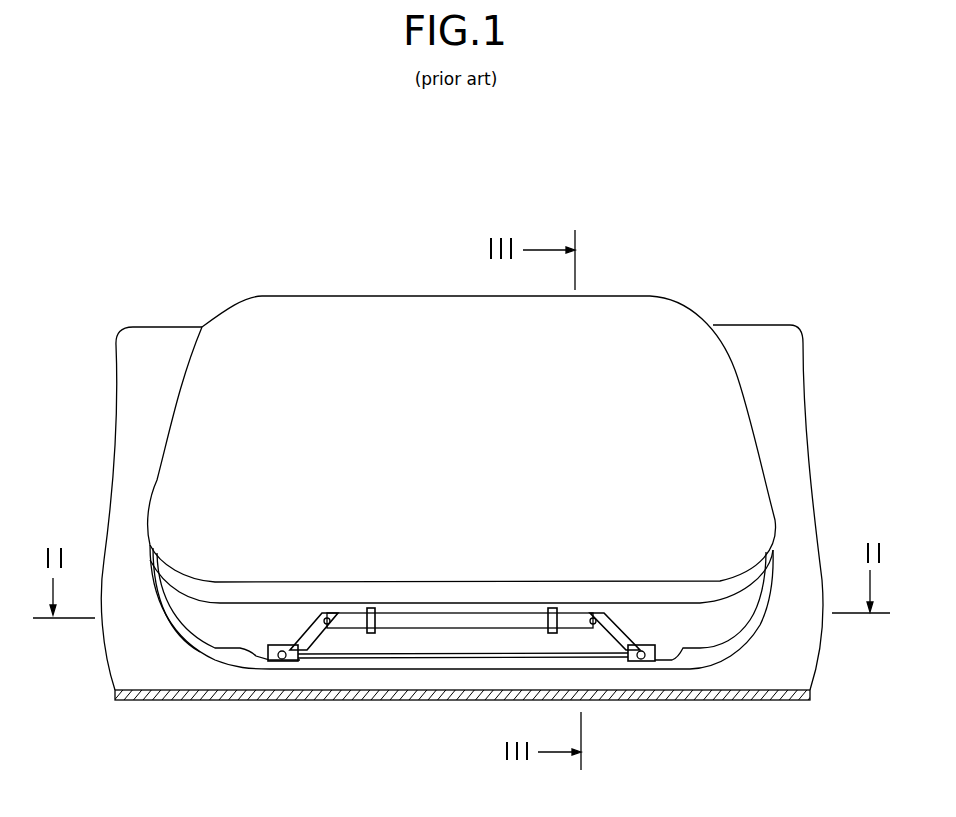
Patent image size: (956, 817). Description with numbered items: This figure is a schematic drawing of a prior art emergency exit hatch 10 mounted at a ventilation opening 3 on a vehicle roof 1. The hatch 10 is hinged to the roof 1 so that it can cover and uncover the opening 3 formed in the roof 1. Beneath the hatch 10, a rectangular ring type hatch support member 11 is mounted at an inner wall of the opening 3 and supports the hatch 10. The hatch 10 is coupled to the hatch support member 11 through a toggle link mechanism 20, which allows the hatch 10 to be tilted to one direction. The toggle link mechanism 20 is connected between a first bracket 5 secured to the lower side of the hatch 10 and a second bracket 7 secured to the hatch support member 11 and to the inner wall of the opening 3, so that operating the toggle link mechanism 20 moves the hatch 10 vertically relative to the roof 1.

The roof 1 is at (160, 345).
The emergency exit hatch 10 is at (657, 335).
The opening 3 is at (714, 625).
The hatch support member 11 is at (180, 647).
The first bracket 5 is at (518, 605).
The toggle link mechanism 20 is at (425, 606).
The second bracket 7 is at (380, 644).